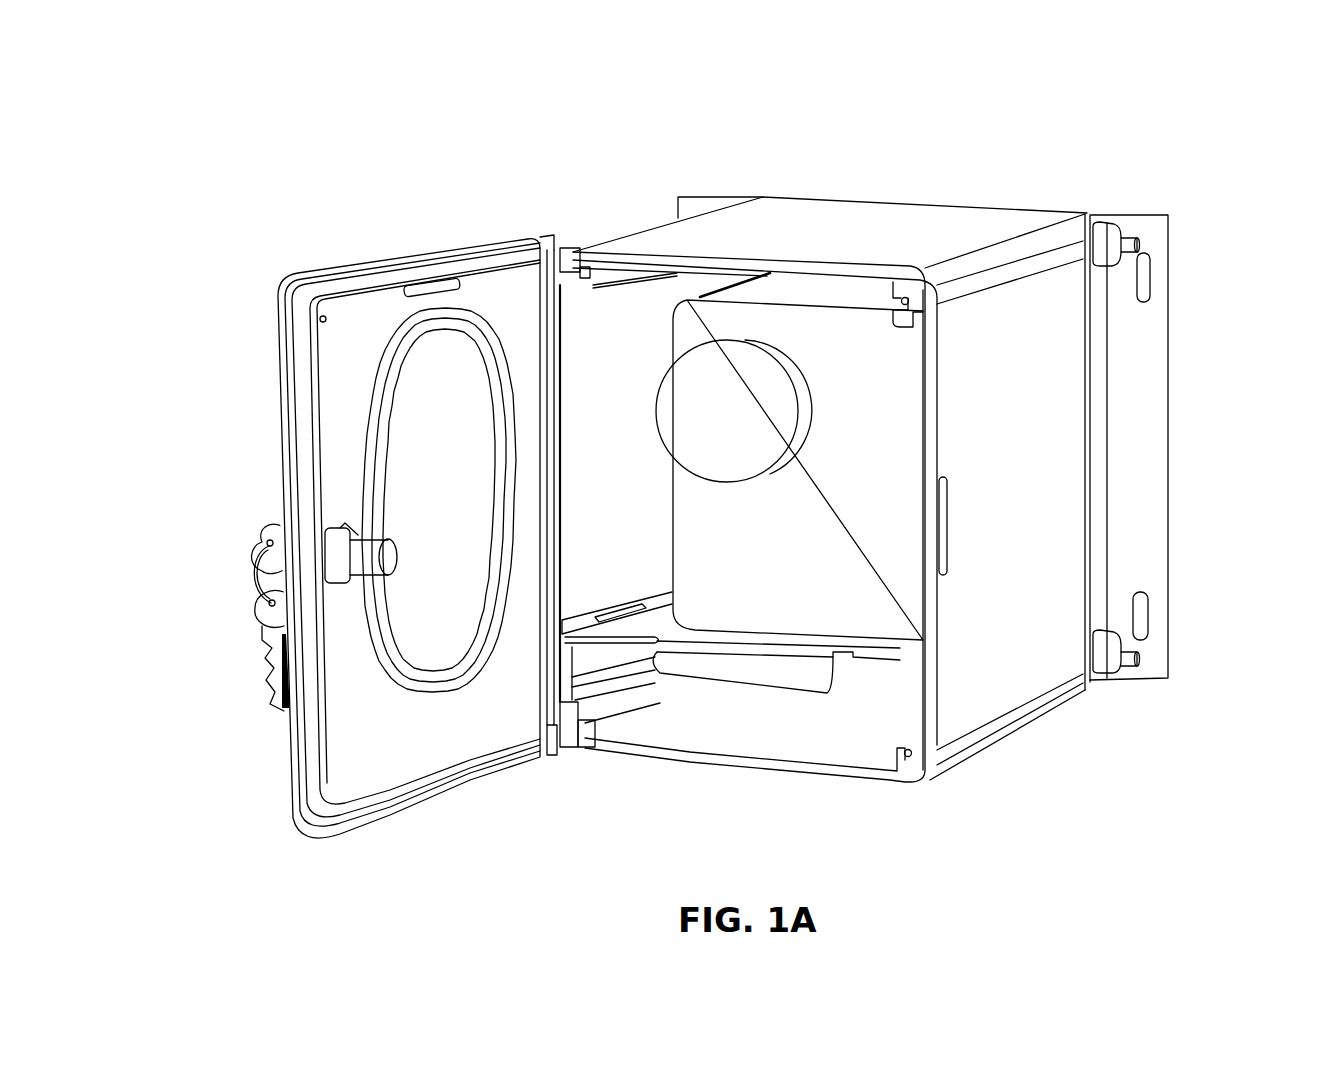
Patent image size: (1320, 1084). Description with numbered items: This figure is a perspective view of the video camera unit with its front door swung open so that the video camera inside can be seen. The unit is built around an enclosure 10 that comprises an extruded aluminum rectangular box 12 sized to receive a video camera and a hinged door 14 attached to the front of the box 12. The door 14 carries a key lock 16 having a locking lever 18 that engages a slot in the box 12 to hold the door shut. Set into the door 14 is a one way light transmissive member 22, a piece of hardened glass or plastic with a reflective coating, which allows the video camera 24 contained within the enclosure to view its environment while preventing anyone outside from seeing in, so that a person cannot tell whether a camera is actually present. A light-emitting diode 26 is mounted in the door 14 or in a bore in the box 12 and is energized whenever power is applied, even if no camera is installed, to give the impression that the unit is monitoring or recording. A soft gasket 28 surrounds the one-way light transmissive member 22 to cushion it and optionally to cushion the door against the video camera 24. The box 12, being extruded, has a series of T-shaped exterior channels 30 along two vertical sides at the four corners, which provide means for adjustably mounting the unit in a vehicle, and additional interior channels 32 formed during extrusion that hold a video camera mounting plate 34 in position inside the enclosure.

The enclosure 10 is at (900, 176).
The box 12 is at (1020, 660).
The hinged door 14 is at (370, 318).
The key lock 16 is at (345, 523).
The locking lever 18 is at (327, 580).
The one way light transmissive member 22 is at (417, 466).
The video camera 24 is at (835, 340).
The light-emitting diode 26 is at (315, 307).
The soft gasket 28 is at (405, 670).
The T-shaped exterior channels 30 is at (1088, 230).
The interior channels 32 is at (567, 640).
The video camera mounting plate 34 is at (778, 663).